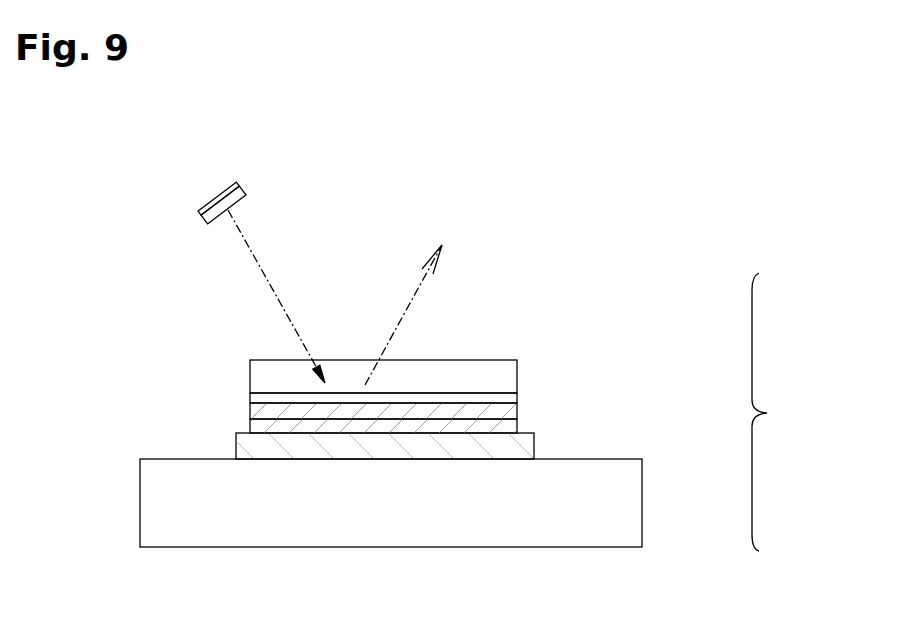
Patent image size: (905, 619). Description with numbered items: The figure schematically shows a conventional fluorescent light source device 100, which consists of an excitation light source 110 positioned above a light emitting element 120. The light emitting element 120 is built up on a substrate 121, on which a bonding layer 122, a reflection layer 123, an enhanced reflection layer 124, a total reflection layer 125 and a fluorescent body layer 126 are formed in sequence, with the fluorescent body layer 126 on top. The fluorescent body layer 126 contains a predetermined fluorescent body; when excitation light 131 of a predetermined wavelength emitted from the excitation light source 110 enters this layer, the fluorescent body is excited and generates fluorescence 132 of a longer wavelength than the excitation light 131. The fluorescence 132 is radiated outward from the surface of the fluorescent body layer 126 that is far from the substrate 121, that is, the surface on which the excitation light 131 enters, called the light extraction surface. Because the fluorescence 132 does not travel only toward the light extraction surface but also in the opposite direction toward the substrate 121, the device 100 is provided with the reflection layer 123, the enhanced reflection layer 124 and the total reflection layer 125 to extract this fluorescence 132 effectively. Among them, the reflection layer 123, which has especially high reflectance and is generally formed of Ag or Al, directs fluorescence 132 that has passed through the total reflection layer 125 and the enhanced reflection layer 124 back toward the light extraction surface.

The fluorescent light source device 100 is at (857, 590).
The excitation light source 110 is at (198, 215).
The light emitting element 120 is at (787, 412).
The substrate 121 is at (633, 522).
The bonding layer 122 is at (517, 448).
The reflection layer 123 is at (505, 428).
The enhanced reflection layer 124 is at (507, 413).
The total reflection layer 125 is at (500, 398).
The fluorescent body layer 126 is at (508, 370).
The excitation light 131 is at (272, 292).
The fluorescence 132 is at (405, 318).